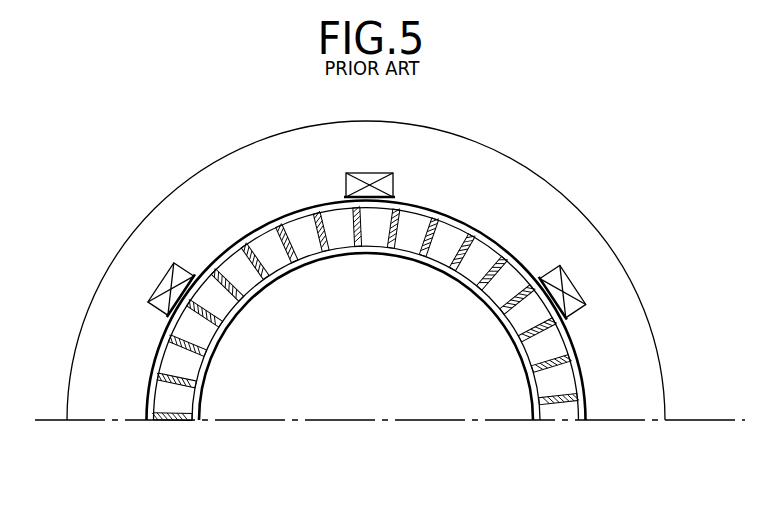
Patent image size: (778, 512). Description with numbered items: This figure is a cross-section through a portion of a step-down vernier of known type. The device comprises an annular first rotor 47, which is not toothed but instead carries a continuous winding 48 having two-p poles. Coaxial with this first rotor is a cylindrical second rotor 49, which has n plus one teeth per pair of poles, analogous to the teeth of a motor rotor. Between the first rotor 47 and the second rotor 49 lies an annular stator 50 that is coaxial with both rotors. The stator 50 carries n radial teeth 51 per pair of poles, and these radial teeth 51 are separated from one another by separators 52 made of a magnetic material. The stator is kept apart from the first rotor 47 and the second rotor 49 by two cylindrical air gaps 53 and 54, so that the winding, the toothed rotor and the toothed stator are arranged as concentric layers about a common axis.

The first rotor 47 is at (478, 167).
The continuous winding 48 is at (370, 173).
The second rotor 49 is at (288, 395).
The stator 50 is at (256, 224).
The radial teeth 51 is at (235, 262).
The separators 52 is at (240, 278).
The cylindrical air gap 53 is at (492, 243).
The cylindrical air gap 54 is at (537, 410).